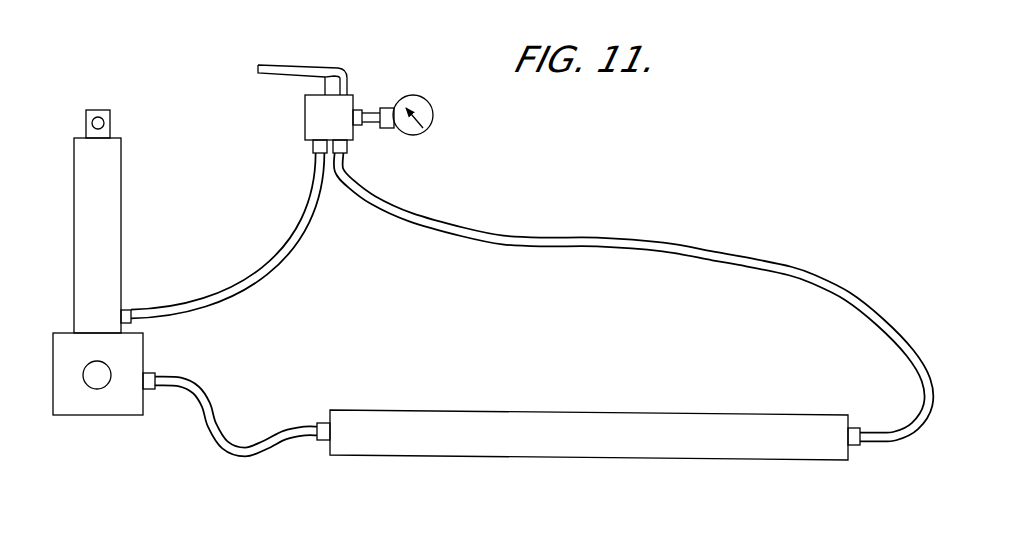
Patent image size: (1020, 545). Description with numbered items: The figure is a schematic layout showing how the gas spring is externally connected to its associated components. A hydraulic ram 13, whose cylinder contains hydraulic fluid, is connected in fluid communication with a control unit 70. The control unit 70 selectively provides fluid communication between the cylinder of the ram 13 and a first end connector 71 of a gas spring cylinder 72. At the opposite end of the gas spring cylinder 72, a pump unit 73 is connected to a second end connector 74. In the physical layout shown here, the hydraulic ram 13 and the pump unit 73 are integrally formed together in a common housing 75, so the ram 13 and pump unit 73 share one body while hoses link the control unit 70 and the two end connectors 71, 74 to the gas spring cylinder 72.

The ram 13 is at (139, 221).
The common housing 75 is at (121, 265).
The pump unit 73 is at (152, 352).
The control unit 70 is at (374, 84).
The gas spring cylinder 72 is at (558, 410).
The second end connector 74 is at (325, 423).
The first end connector 71 is at (858, 428).